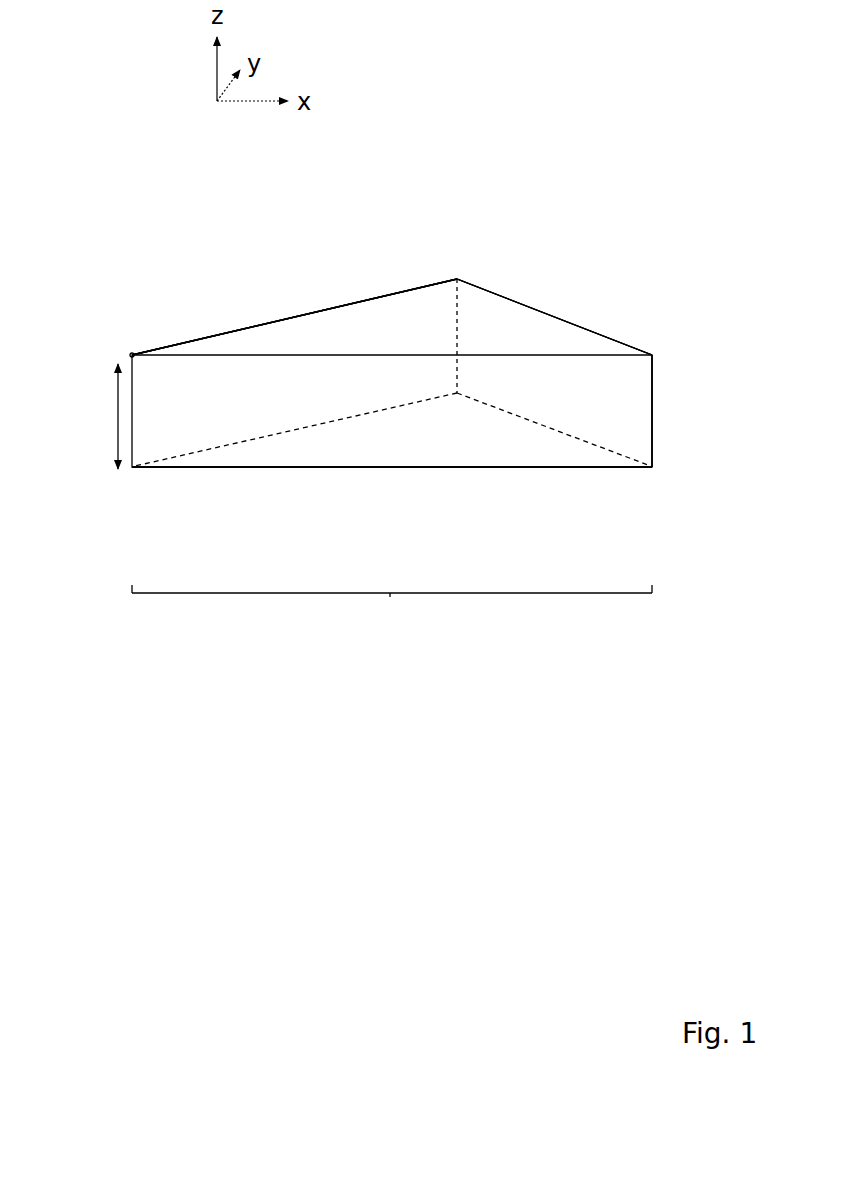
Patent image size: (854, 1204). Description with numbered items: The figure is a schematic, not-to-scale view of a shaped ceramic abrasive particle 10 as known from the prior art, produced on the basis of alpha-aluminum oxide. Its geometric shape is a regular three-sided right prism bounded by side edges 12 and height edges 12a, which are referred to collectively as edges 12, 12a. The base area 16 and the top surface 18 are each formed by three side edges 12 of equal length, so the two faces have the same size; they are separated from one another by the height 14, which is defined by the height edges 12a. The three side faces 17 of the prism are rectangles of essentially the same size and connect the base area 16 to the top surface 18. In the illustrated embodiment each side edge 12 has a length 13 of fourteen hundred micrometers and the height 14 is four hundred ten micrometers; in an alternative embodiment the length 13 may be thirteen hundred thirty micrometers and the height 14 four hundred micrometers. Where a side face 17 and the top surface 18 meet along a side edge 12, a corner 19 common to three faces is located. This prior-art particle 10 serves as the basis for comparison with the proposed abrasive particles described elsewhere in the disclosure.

The shaped ceramic abrasive particle 10 is at (608, 188).
The side edges 12 is at (424, 286).
The height edges 12a is at (654, 432).
The length 13 is at (392, 612).
The height 14 is at (118, 405).
The base area 16 is at (448, 462).
The side faces 17 is at (266, 331).
The top surface 18 is at (380, 317).
The corner 19 is at (125, 345).